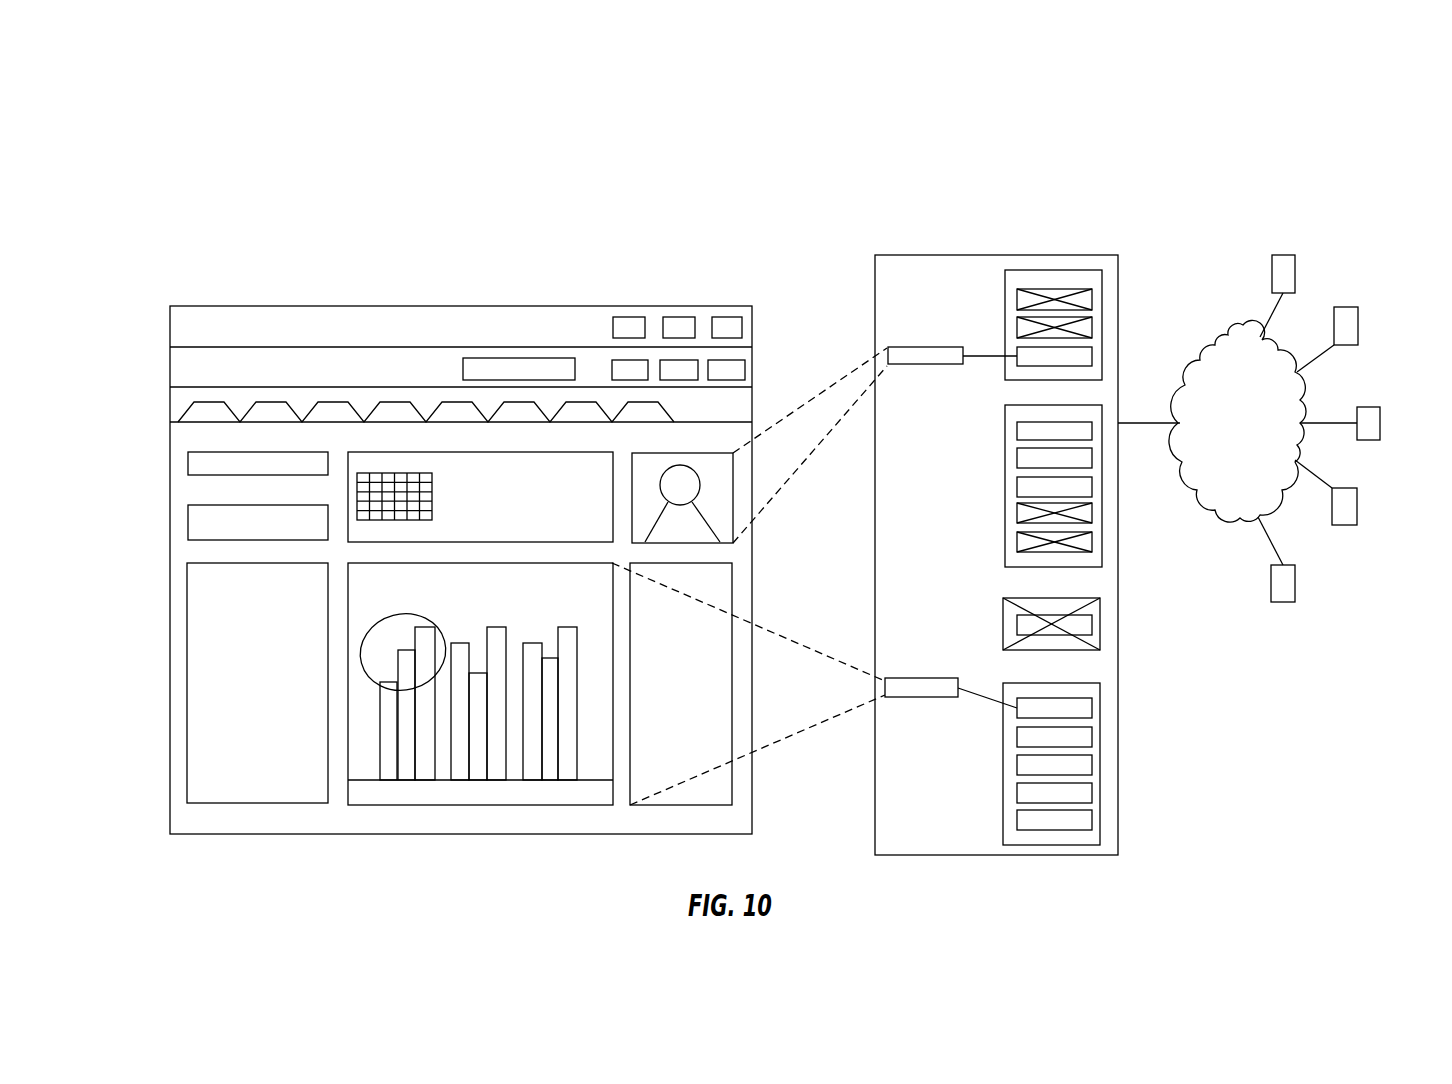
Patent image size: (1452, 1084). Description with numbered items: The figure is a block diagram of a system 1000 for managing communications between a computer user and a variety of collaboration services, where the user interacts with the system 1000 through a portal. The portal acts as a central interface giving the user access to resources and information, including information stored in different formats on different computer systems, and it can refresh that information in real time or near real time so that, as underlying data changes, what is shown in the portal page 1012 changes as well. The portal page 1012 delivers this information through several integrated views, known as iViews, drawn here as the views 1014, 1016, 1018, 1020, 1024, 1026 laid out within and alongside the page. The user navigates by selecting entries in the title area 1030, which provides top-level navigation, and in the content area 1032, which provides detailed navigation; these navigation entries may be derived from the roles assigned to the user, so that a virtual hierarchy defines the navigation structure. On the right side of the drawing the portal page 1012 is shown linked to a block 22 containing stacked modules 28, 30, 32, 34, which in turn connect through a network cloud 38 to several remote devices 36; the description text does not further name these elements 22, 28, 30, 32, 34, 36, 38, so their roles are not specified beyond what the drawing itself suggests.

The system 1000 is at (858, 120).
The portal page 1012 is at (676, 238).
The integrated view 1014 is at (188, 523).
The integrated view 1016 is at (362, 452).
The integrated view 1018 is at (670, 452).
The integrated view 1020 is at (440, 805).
The integrated view 1024 is at (913, 347).
The integrated view 1026 is at (920, 678).
The title area 1030 is at (183, 413).
The content area 1032 is at (188, 463).
The server system 22 is at (1025, 226).
The server module 28 is at (1102, 285).
The server module 30 is at (1100, 537).
The processing module 32 is at (1100, 625).
The database 34 is at (1100, 767).
The client device 36 is at (1283, 255).
The network 38 is at (1215, 345).